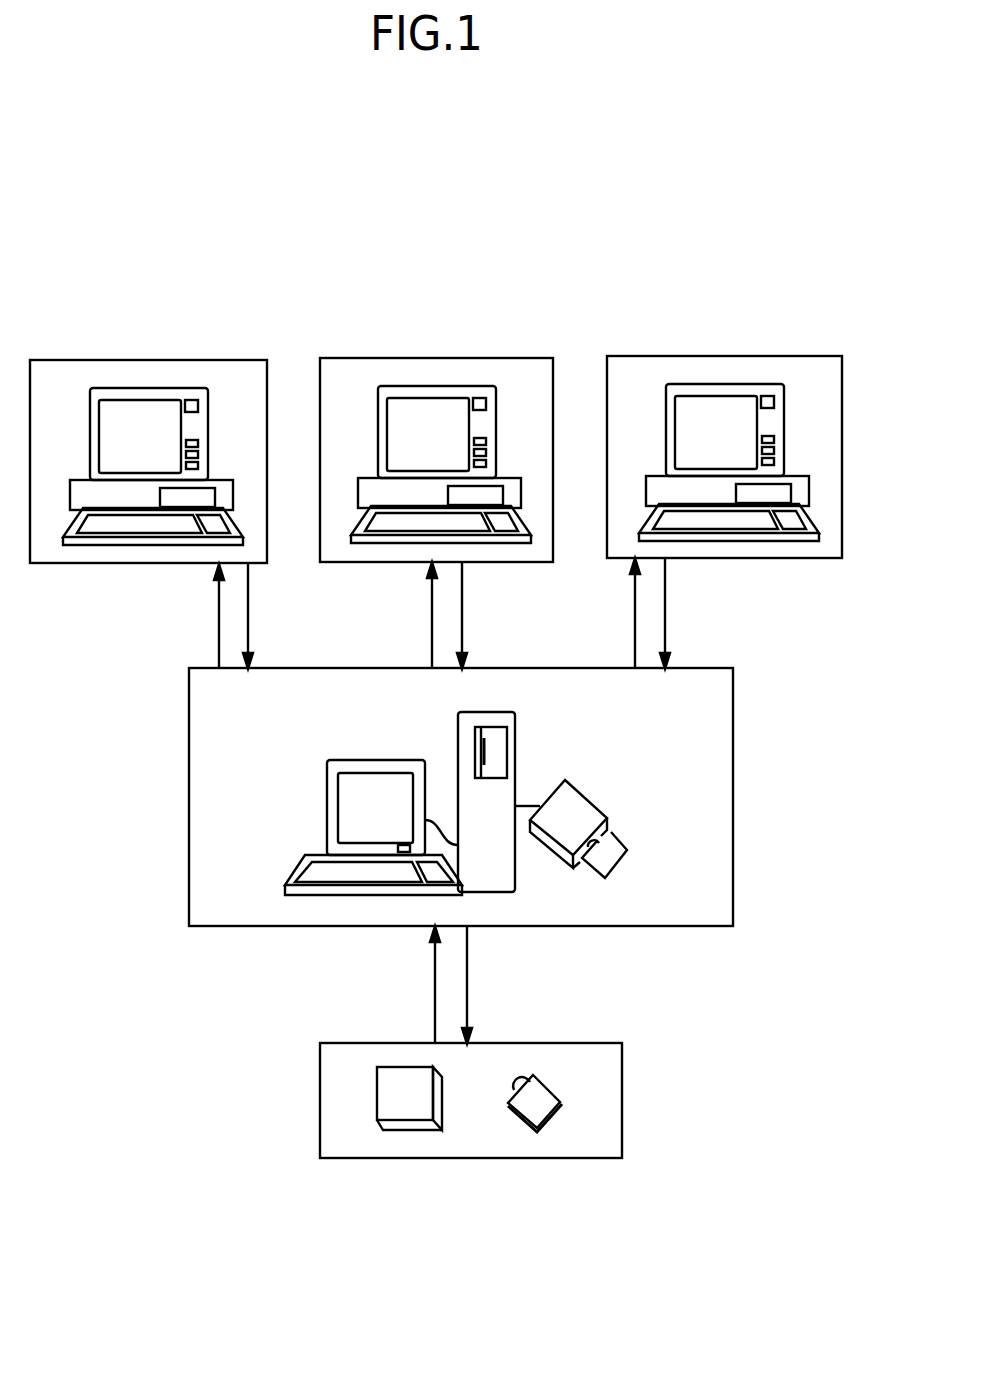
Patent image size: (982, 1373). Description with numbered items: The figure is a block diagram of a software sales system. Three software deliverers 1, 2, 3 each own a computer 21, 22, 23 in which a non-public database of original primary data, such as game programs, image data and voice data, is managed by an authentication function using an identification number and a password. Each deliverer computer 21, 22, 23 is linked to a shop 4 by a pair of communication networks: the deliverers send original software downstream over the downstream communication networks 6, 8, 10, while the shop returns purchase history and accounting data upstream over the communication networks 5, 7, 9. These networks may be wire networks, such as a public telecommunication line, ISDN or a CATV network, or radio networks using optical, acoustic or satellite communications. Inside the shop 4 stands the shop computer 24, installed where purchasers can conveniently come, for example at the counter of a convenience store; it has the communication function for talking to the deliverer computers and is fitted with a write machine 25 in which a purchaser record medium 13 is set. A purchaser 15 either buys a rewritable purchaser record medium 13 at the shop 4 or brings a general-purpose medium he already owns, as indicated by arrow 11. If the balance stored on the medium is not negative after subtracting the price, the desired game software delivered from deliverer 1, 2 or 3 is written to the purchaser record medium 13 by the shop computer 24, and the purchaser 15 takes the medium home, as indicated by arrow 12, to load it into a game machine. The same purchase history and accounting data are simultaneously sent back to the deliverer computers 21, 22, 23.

The software deliverer 1 is at (53, 360).
The software deliverer 2 is at (352, 358).
The software deliverer 3 is at (651, 356).
The shop 4 is at (189, 690).
The communication network 5 is at (205, 616).
The downstream communication network 6 is at (261, 616).
The communication network 7 is at (417, 615).
The downstream communication network 8 is at (473, 615).
The communication network 9 is at (624, 613).
The downstream communication network 10 is at (685, 613).
The bringing of record medium to shop 11 is at (417, 984).
The taking of record medium home 12 is at (486, 985).
The purchaser record medium 13 is at (620, 840).
The purchaser 15 is at (320, 1083).
The computer of software deliverer 21 is at (233, 502).
The computer of software deliverer 22 is at (520, 498).
The computer of software deliverer 23 is at (807, 497).
The shop computer 24 is at (513, 735).
The write machine 25 is at (580, 790).